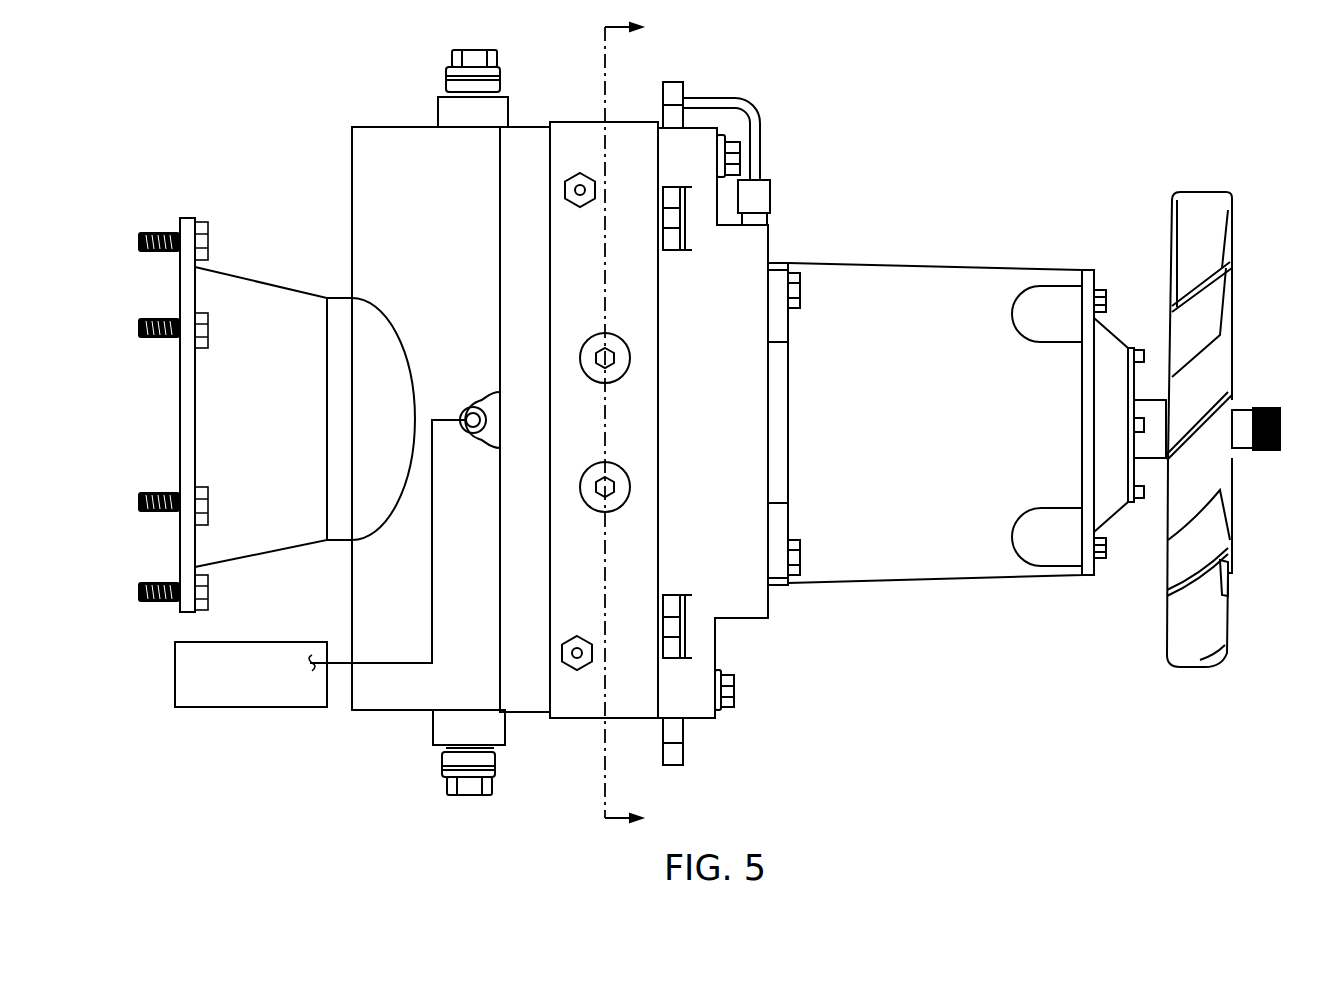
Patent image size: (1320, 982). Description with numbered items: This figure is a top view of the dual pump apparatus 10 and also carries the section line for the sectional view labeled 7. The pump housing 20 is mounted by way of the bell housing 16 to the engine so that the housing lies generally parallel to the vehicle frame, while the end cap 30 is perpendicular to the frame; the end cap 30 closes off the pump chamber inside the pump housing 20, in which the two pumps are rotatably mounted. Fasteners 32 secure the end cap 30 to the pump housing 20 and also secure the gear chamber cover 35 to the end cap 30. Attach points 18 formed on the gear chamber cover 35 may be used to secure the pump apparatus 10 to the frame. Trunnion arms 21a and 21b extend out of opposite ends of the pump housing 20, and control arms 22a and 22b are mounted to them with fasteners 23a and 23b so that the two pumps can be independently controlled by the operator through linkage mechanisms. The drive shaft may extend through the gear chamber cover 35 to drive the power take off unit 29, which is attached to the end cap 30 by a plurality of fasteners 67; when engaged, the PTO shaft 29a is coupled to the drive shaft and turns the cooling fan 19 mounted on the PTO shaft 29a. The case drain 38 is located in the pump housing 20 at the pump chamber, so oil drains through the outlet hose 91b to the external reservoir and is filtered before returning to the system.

The pump apparatus 10 is at (210, 101).
The bell housing 16 is at (246, 430).
The cooling fan 19 is at (1184, 395).
The pump housing 20 is at (414, 245).
The trunnion arm 21a is at (440, 97).
The trunnion arm 21b is at (442, 746).
The control arm 22a is at (500, 82).
The control arm 22b is at (497, 765).
The fastener 23a is at (468, 52).
The fastener 23b is at (470, 796).
The attach points 18 is at (703, 80).
The power take off unit 29 is at (921, 435).
The PTO shaft 29a is at (1240, 410).
The end cap 30 is at (619, 433).
The fasteners 32 is at (741, 157).
The gear chamber cover 35 is at (698, 433).
The case drain 38 is at (473, 420).
The fasteners 67 is at (801, 290).
The outlet hose 91b is at (433, 540).
The section line 7- 7 is at (635, 424).